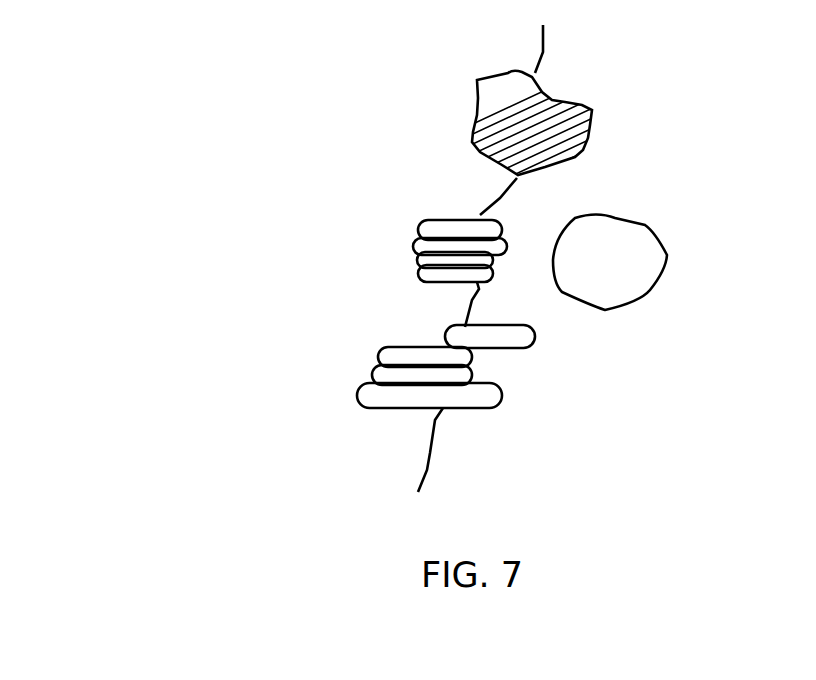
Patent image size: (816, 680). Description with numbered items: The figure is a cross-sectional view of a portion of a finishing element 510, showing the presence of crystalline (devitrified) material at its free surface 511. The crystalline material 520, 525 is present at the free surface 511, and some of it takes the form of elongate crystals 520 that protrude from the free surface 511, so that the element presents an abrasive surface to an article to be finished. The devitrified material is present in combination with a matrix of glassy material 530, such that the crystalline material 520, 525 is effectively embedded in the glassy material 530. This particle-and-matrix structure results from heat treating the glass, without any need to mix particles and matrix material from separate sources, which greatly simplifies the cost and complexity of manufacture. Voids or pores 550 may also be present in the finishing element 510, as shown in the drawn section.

The finishing element 510 is at (95, 394).
The free surface 511 is at (430, 447).
The elongate crystals 520 is at (418, 230).
The crystalline material 525 is at (475, 102).
The glassy material 530 is at (643, 371).
The voids 550 is at (668, 255).